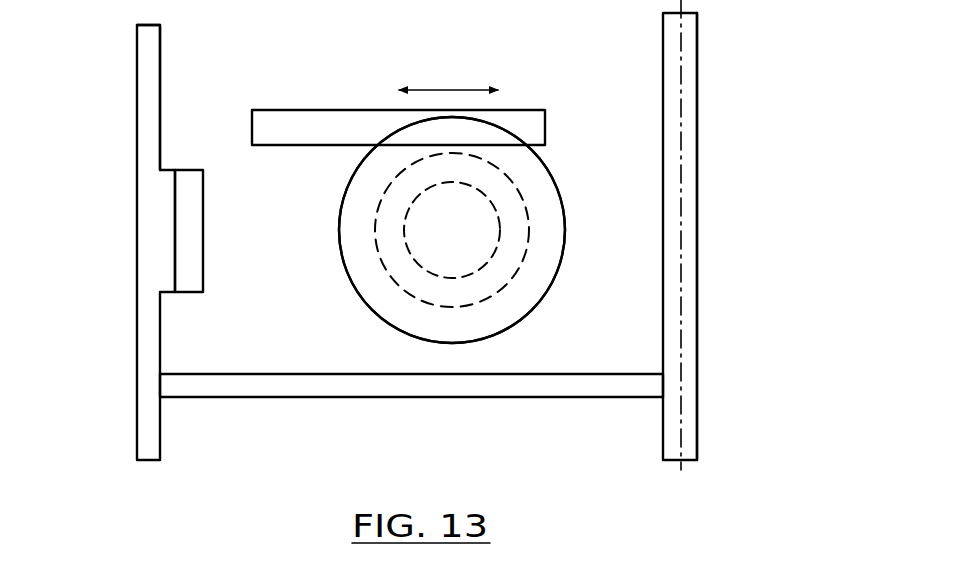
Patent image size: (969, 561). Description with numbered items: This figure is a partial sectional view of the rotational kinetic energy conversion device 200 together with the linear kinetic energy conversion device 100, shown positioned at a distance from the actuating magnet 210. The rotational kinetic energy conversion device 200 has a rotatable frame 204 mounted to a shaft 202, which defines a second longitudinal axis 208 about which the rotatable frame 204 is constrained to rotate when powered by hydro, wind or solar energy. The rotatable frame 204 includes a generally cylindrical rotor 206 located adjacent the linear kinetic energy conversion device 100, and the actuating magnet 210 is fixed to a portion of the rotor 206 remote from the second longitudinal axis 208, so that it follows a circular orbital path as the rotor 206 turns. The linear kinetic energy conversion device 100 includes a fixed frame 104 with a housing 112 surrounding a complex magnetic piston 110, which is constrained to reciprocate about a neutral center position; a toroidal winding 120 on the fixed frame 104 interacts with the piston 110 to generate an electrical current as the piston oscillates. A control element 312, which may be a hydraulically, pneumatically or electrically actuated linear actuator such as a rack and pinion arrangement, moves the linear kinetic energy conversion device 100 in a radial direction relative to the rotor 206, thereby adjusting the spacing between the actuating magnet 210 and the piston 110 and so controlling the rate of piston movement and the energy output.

The linear kinetic energy conversion device 100 is at (489, 249).
The fixed frame 104 is at (553, 177).
The complex magnetic piston 110 is at (457, 280).
The housing 112 is at (562, 200).
The toroidal winding 120 is at (432, 321).
The rotational kinetic energy conversion device 200 is at (700, 47).
The shaft 202 is at (698, 233).
The rotatable frame 204 is at (137, 413).
The rotor 206 is at (137, 190).
The second longitudinal axis 208 is at (681, 470).
The actuating magnet 210 is at (188, 268).
The control element 312 is at (290, 110).